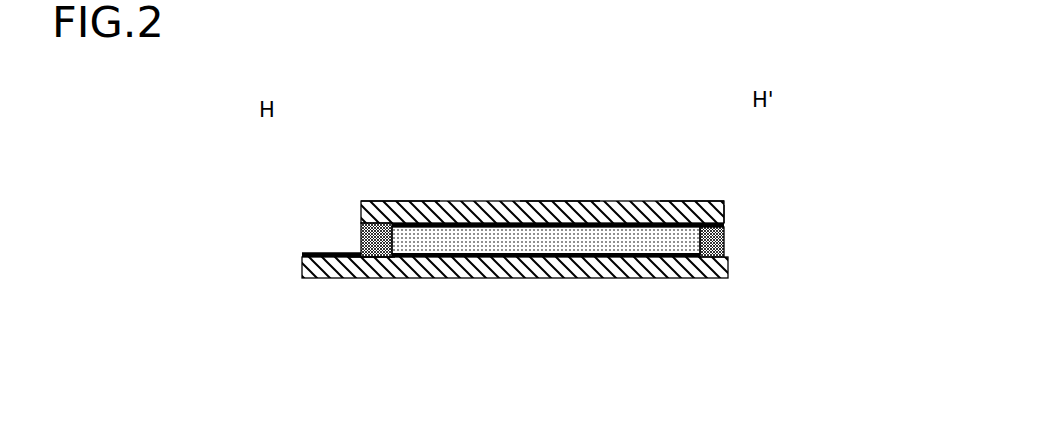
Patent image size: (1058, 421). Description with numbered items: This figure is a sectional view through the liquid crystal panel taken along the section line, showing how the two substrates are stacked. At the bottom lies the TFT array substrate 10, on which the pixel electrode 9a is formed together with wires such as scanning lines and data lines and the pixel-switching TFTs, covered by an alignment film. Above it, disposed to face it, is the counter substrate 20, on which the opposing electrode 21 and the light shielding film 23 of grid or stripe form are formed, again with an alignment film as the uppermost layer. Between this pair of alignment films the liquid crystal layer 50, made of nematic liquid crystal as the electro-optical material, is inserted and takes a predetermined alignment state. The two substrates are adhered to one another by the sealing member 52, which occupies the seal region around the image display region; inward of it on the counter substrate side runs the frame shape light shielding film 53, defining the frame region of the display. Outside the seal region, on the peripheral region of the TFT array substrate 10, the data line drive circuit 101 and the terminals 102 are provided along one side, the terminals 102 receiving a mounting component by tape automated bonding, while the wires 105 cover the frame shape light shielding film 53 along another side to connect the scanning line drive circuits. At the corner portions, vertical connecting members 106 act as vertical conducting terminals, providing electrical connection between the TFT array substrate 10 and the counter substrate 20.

The counter substrate 20 is at (483, 201).
The light shielding film 23 is at (557, 201).
The frame shape light shielding film 53 is at (413, 201).
The opposing electrode 21 is at (630, 201).
The sealing member 52 is at (360, 226).
The wires 105 is at (725, 242).
The liquid crystal layer 50 is at (483, 240).
The pixel electrode 9a is at (440, 257).
The data line drive circuit 101 is at (333, 253).
The terminals 102 is at (308, 254).
The vertical connecting members 106 is at (363, 257).
The TFT array substrate 10 is at (567, 257).